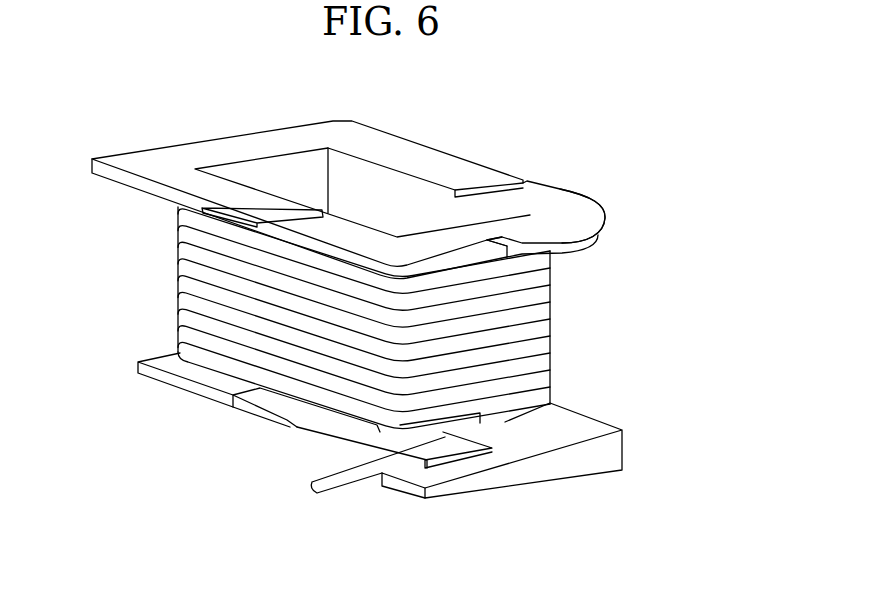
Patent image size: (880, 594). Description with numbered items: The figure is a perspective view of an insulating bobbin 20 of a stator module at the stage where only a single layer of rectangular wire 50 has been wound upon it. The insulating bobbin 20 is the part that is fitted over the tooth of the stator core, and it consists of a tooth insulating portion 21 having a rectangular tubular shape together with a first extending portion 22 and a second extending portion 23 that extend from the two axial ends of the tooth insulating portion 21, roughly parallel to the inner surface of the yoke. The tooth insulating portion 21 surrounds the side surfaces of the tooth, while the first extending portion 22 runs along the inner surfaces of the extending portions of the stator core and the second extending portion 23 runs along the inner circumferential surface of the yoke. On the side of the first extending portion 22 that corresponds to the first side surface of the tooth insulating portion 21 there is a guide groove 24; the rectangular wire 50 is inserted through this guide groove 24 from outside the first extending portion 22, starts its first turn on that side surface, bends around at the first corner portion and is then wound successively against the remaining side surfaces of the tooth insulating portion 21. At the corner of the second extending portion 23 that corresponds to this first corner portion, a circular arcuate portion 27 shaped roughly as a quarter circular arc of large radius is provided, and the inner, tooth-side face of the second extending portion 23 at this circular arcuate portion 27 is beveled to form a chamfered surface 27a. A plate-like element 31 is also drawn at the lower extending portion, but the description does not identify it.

The insulating bobbin 20 is at (443, 158).
The tooth insulating portion 21 is at (283, 172).
The first extending portion 22 is at (607, 448).
The second extending portion 23 is at (149, 159).
The guide groove 24 is at (400, 500).
The circular arcuate portion 27 is at (583, 217).
The chamfered surface 27a is at (598, 243).
The terminal 31 is at (378, 432).
The rectangular wire 50 is at (338, 493).